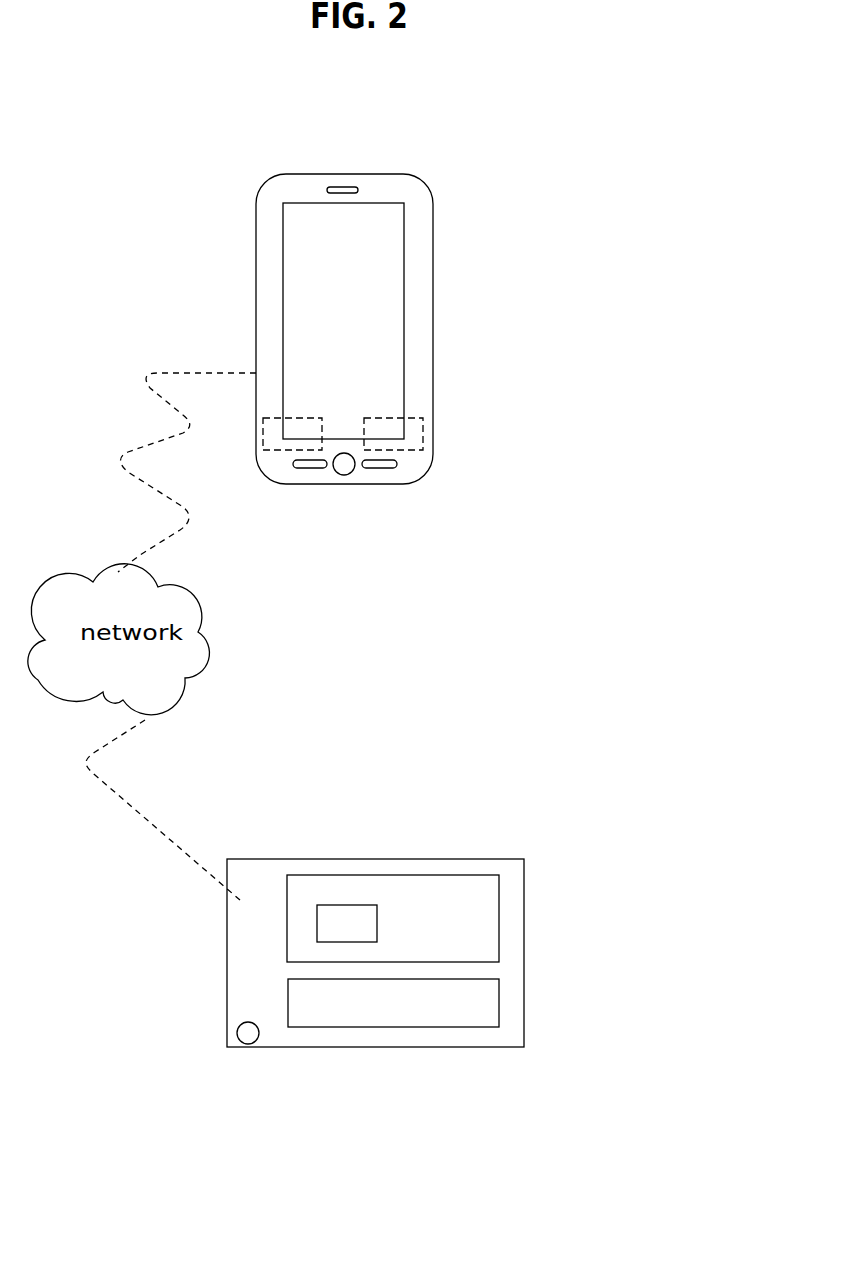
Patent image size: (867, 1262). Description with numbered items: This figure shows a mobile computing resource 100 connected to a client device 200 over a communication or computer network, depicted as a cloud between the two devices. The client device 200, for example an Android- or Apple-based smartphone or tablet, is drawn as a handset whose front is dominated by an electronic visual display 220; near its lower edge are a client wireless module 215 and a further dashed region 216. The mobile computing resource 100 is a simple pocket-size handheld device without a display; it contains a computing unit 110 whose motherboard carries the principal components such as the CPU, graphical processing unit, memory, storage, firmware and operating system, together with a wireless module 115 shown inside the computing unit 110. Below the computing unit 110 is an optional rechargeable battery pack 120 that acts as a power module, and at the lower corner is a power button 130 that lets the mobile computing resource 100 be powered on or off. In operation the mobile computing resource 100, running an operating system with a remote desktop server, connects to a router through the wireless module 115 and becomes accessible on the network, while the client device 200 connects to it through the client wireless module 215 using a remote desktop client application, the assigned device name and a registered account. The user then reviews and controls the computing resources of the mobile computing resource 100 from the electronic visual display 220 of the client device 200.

The client device 200 is at (343, 168).
The electronic visual display 220 is at (297, 338).
The client wireless module 215 is at (267, 448).
The second button region 216 is at (423, 443).
The mobile computing resource 100 is at (477, 860).
The computing unit 110 is at (383, 875).
The wireless module 115 is at (333, 905).
The rechargeable battery pack 120 is at (363, 1025).
The power button 130 is at (243, 1038).